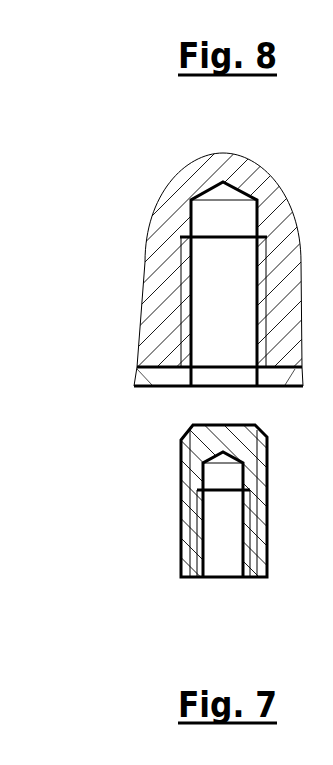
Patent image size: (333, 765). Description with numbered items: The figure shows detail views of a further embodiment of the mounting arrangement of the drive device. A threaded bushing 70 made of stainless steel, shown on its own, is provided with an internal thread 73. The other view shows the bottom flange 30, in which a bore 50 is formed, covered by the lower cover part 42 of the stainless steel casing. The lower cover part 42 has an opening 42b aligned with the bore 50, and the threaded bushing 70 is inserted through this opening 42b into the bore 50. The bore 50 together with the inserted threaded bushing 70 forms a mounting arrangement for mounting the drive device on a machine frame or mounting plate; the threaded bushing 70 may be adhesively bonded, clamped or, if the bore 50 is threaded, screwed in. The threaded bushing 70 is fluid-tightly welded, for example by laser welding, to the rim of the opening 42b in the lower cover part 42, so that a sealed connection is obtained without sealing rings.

In FIG. 8, the bottom flange 30 is at (147, 305).
In FIG. 8, the bore 50 is at (205, 257).
In FIG. 8, the lower cover part 42 is at (137, 372).
In FIG. 8, the opening 42b is at (242, 388).
In FIG. 7, the threaded bushing 70 is at (180, 508).
In FIG. 7, the internal thread 73 is at (207, 560).